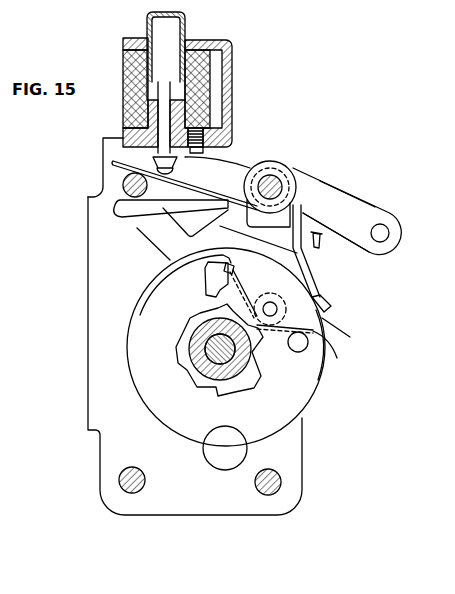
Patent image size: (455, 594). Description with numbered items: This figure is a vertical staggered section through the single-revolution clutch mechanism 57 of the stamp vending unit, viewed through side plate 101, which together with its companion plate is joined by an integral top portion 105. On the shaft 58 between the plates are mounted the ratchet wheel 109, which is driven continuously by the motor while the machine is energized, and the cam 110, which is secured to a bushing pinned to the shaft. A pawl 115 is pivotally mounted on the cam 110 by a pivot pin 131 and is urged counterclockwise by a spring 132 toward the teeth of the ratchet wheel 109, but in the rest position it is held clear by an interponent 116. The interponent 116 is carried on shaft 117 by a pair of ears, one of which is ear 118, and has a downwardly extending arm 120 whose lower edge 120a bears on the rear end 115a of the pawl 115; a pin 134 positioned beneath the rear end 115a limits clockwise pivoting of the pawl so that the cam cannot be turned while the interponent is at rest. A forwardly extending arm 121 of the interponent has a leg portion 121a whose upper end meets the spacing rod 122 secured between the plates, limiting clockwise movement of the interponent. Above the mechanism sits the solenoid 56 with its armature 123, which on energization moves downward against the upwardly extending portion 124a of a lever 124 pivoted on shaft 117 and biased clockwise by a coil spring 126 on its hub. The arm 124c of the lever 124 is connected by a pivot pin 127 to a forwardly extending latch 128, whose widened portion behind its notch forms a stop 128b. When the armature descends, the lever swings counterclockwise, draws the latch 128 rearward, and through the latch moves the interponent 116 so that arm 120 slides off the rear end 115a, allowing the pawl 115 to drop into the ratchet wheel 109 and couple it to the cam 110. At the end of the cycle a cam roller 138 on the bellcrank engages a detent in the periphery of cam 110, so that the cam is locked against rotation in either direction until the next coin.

The solenoid 56 is at (236, 66).
The clutch mechanism 57 is at (324, 380).
The shaft 58 is at (208, 355).
The plate 101 is at (190, 500).
The top portion 105 is at (103, 140).
The ratchet wheel 109 is at (200, 368).
The cam 110 is at (282, 420).
The pawl 115 is at (203, 279).
The rear end of pawl 115a is at (342, 351).
The interponent 116 is at (316, 263).
The shaft 117 is at (280, 181).
The ear 118 is at (305, 192).
The arm 120 is at (300, 253).
The lower edge of arm 120a is at (322, 332).
The arm 121 is at (216, 228).
The leg portion 121a is at (155, 227).
The spacing rod 122 is at (122, 186).
The armature 123 is at (172, 40).
The lever 124 is at (118, 220).
The upwardly extending portion of lever 124a is at (210, 150).
The arm of lever 124c is at (353, 208).
The coil spring 126 is at (262, 164).
The pivot pin 127 is at (387, 233).
The latch 128 is at (322, 250).
The stop 128b is at (330, 303).
The pivot pin 131 is at (272, 317).
The spring 132 is at (164, 267).
The pin 134 is at (305, 352).
The cam roller 138 is at (226, 460).